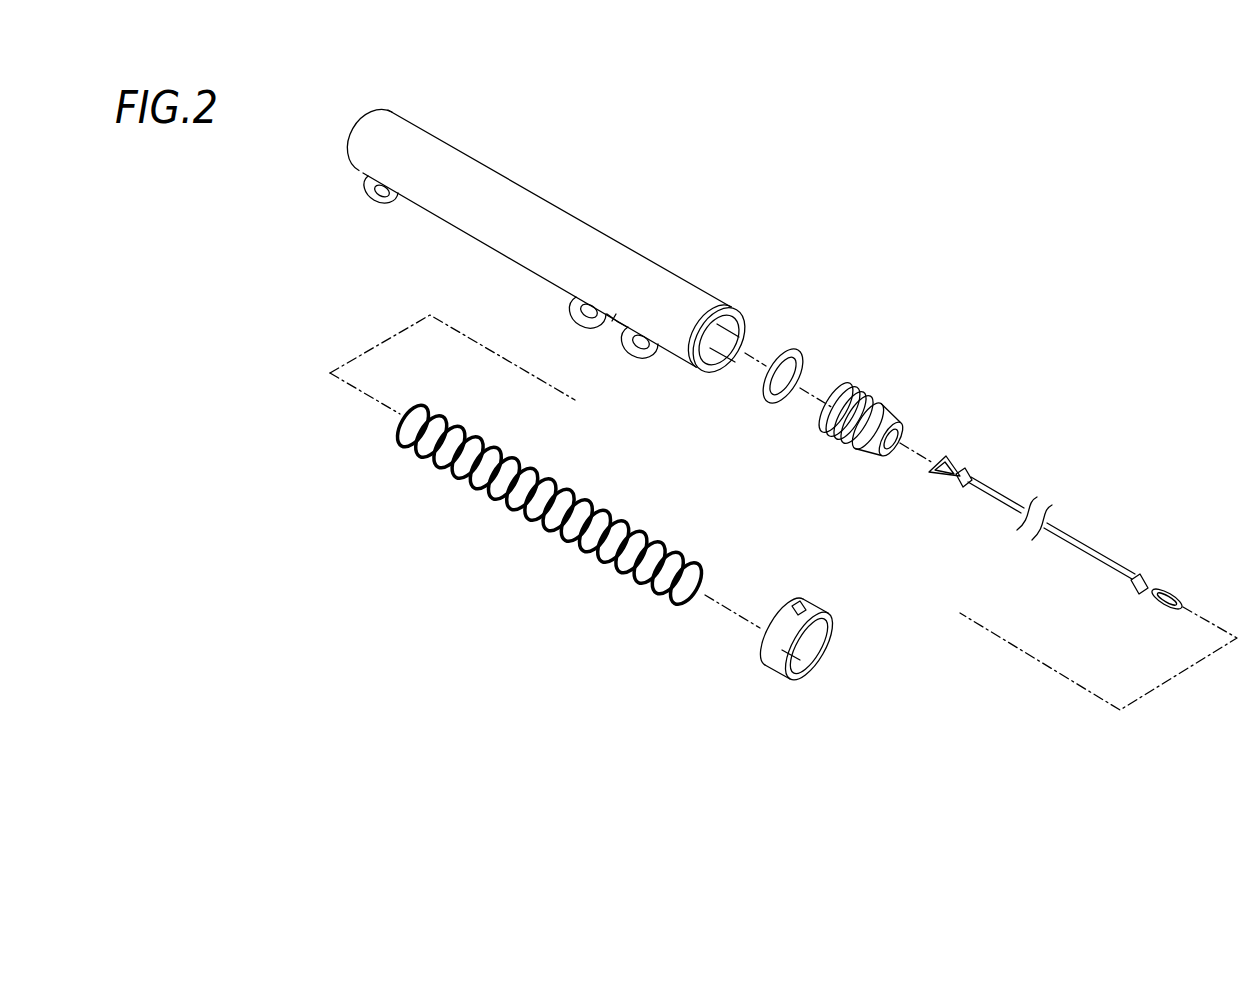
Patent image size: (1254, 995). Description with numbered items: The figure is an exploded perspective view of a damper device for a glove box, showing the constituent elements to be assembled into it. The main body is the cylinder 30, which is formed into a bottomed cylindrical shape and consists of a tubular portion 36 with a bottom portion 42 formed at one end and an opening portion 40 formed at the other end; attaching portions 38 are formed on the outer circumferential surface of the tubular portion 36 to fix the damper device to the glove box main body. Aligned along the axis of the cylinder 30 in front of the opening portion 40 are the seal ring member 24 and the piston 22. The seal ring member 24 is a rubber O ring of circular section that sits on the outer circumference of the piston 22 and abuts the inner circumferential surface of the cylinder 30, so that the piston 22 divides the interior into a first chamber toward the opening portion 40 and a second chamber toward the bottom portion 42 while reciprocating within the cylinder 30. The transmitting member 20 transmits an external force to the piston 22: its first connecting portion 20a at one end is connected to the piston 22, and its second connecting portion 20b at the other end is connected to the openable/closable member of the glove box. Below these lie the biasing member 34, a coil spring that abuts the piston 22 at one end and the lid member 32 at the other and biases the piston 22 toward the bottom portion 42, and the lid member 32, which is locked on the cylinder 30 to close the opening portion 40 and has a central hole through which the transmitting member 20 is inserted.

The transmitting member 20 is at (1061, 508).
The first connecting portion 20a is at (952, 460).
The second connecting portion 20b is at (1170, 593).
The piston 22 is at (874, 394).
The seal ring member 24 is at (793, 351).
The cylinder 30 is at (537, 245).
The lid member 32 is at (827, 611).
The biasing member 34 is at (597, 504).
The tubular portion 36 is at (477, 184).
The attaching portions 38 is at (587, 328).
The opening portion 40 is at (747, 326).
The bottom portion 42 is at (358, 139).